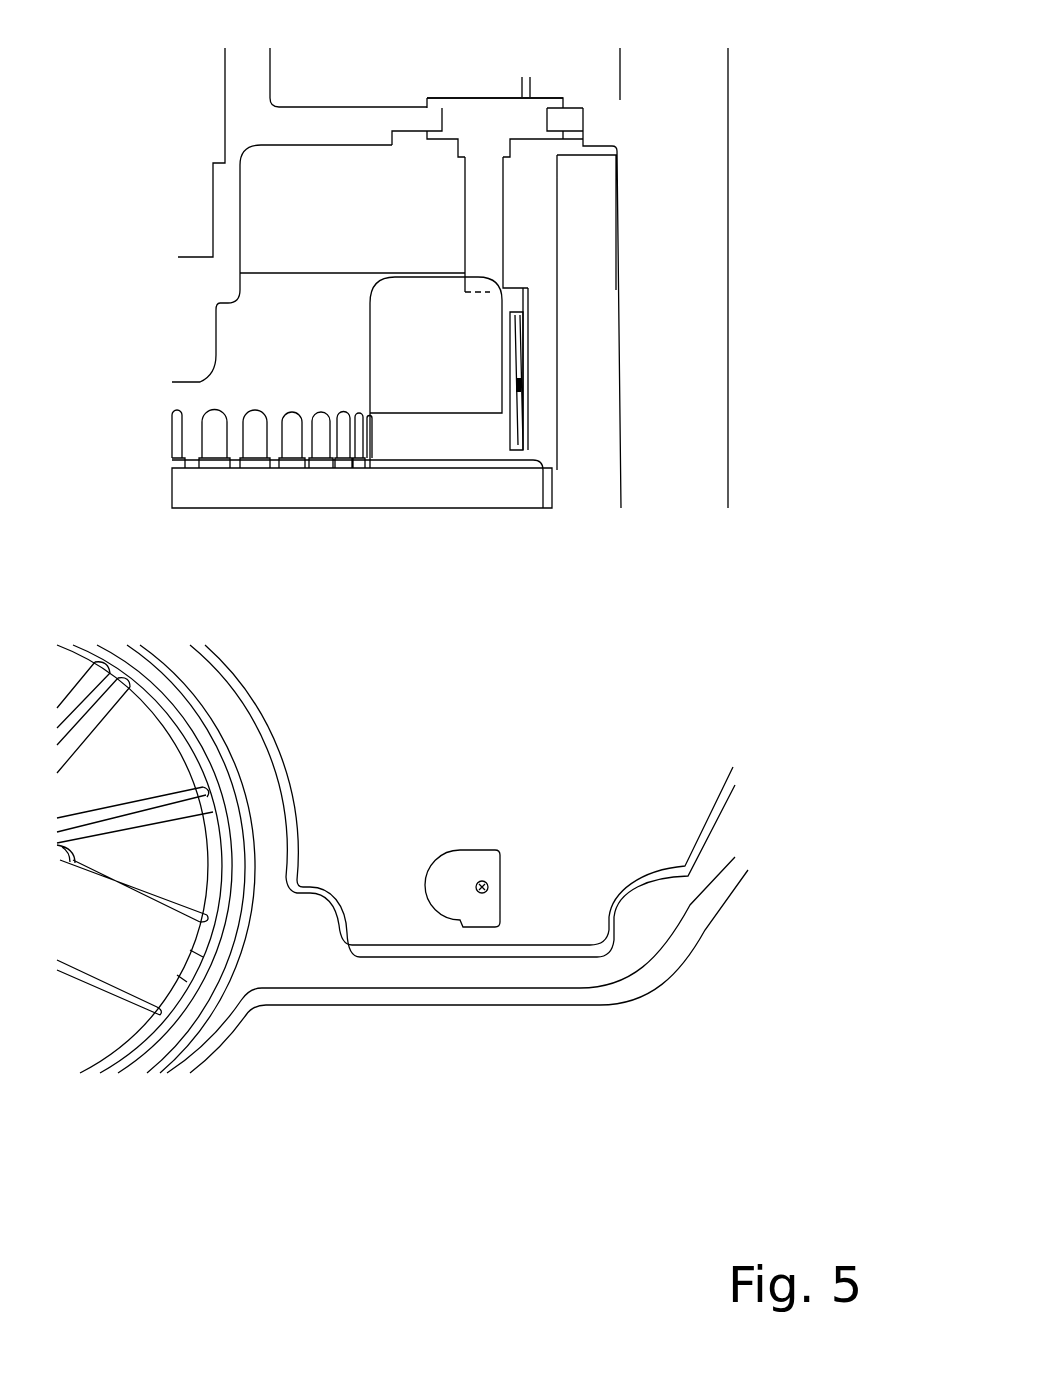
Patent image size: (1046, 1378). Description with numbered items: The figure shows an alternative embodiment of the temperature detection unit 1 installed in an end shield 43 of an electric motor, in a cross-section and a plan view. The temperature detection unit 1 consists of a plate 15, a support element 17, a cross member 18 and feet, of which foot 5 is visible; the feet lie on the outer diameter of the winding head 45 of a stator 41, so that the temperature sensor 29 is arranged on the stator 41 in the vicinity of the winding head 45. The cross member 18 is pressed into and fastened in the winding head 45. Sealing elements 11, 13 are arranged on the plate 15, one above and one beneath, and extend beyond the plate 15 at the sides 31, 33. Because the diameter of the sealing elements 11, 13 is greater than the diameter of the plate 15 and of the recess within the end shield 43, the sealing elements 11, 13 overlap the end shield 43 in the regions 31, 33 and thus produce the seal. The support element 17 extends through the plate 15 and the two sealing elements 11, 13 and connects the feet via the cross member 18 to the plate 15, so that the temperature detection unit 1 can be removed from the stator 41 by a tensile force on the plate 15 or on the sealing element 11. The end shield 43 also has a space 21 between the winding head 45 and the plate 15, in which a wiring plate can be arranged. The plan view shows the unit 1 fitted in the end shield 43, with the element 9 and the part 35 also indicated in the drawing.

The temperature detection unit 1 is at (458, 57).
The foot 5 is at (525, 414).
The antenna 9 is at (527, 332).
The sealing element 11 is at (553, 103).
The sealing element 13 is at (553, 133).
The plate 15 is at (508, 134).
The support element 17 is at (503, 233).
The cross member 18 is at (520, 287).
The space 21 is at (383, 244).
The temperature sensor 29 is at (513, 416).
The side 31 is at (428, 92).
The side 33 is at (430, 145).
The screw 35 is at (535, 66).
The stator 41 is at (240, 504).
The end shield 43 is at (247, 120).
The winding head 45 is at (458, 366).